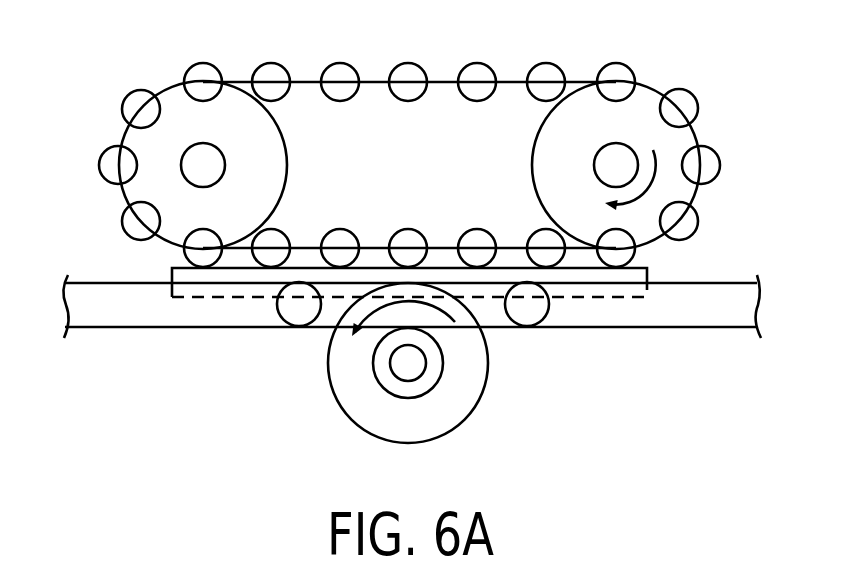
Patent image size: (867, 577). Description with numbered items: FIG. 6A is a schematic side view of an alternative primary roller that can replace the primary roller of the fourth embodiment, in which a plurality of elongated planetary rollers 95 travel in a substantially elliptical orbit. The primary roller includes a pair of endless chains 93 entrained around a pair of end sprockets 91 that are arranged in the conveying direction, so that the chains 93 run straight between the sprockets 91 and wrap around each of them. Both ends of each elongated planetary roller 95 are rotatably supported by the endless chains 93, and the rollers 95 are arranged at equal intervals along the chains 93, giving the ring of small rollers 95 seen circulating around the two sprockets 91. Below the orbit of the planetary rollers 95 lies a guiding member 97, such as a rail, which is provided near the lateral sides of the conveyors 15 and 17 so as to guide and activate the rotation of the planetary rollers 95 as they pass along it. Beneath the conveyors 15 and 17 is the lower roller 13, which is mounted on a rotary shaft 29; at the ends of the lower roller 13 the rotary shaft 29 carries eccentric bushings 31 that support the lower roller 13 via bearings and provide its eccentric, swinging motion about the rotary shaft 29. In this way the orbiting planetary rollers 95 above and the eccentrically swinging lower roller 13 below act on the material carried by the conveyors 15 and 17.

The lower roller 13 is at (453, 412).
The conveyor 15 is at (697, 315).
The conveyor 17 is at (147, 317).
The rotary shaft 29 is at (402, 367).
The eccentric bushing 31 is at (433, 360).
The end sprocket 91 is at (132, 138).
The endless chain 93 is at (508, 78).
The elongated planetary roller 95 is at (408, 93).
The guiding member 97 is at (645, 270).